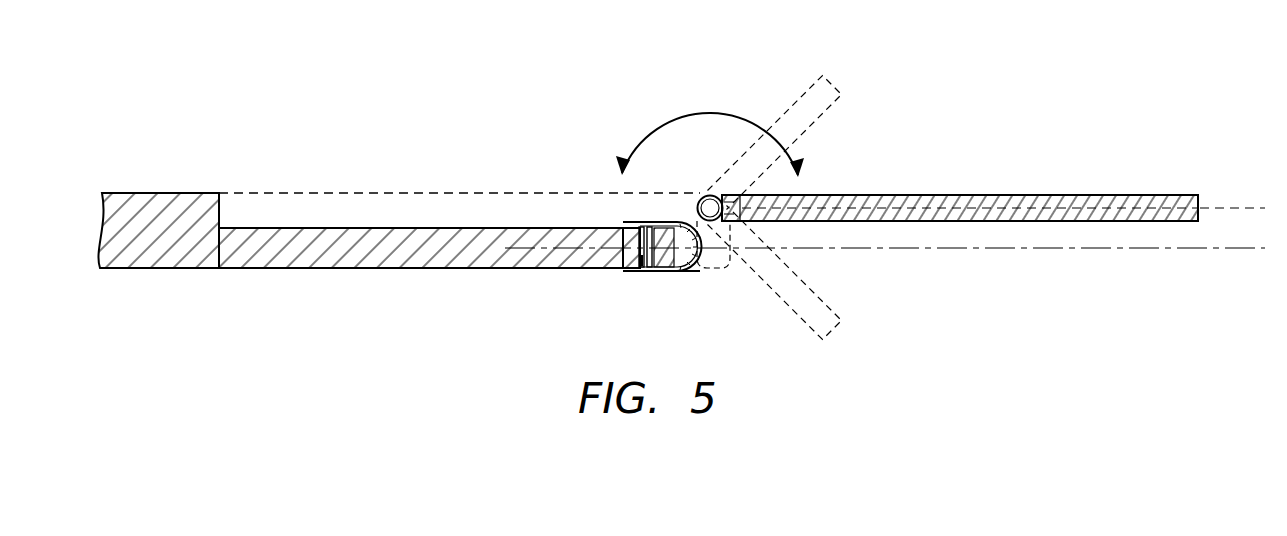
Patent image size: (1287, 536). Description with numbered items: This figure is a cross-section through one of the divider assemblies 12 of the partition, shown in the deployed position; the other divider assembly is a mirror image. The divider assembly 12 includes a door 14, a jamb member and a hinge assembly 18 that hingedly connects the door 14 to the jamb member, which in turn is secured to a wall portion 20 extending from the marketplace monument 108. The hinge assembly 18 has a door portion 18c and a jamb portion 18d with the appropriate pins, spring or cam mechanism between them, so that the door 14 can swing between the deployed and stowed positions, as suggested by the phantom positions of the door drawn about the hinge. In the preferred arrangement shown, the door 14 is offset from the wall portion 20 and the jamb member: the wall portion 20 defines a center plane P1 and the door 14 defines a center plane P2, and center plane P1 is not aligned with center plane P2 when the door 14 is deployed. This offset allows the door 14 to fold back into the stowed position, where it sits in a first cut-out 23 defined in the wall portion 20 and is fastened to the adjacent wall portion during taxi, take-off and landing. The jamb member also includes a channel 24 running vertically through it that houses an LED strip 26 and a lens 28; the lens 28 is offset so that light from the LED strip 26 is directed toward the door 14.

The divider assembly 12 is at (936, 106).
The door 14 is at (1085, 205).
The hinge assembly 18 is at (724, 290).
The door portion 18c is at (700, 196).
The jamb portion 18d is at (666, 271).
The wall portion 20 is at (295, 247).
The first cut-out 23 is at (402, 207).
The channel 24 is at (672, 248).
The LED strip 26 is at (648, 269).
The lens 28 is at (692, 223).
The marketplace monument 108 is at (162, 212).
The center plane P1 is at (1072, 250).
The center plane P2 is at (1250, 207).